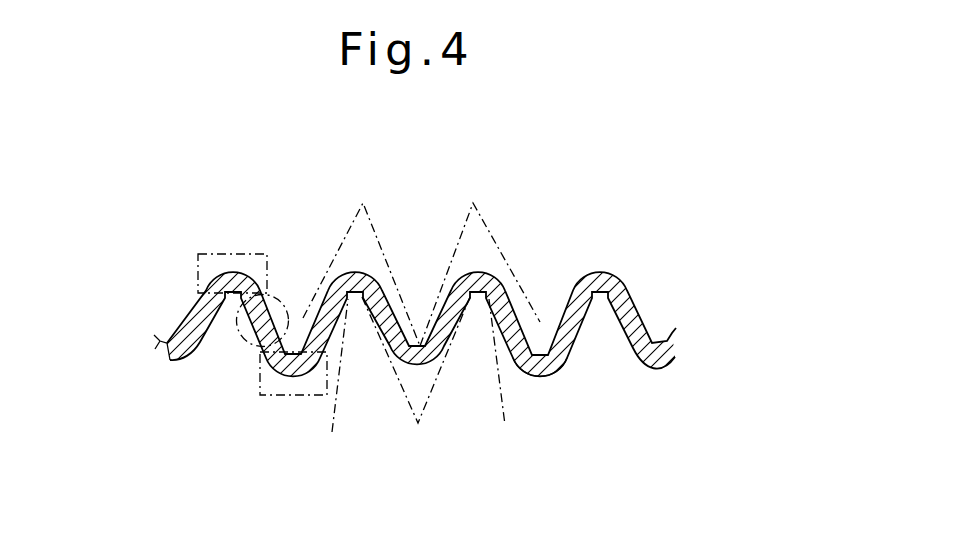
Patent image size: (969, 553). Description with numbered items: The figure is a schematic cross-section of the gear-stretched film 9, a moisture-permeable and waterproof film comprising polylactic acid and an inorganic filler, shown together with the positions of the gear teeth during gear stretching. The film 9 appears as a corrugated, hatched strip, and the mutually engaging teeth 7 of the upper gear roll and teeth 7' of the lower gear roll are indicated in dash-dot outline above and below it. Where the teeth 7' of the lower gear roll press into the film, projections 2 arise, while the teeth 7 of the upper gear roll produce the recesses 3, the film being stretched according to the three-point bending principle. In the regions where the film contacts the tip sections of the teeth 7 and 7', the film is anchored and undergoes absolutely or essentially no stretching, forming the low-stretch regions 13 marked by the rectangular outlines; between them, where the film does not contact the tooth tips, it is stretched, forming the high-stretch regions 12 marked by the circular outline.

The projections 2 is at (603, 253).
The recesses 3 is at (548, 392).
The teeth 7 is at (421, 244).
The teeth 7' is at (418, 395).
The film 9 is at (448, 254).
The high-stretch regions 12 is at (240, 338).
The low-stretch regions 13 is at (252, 253).